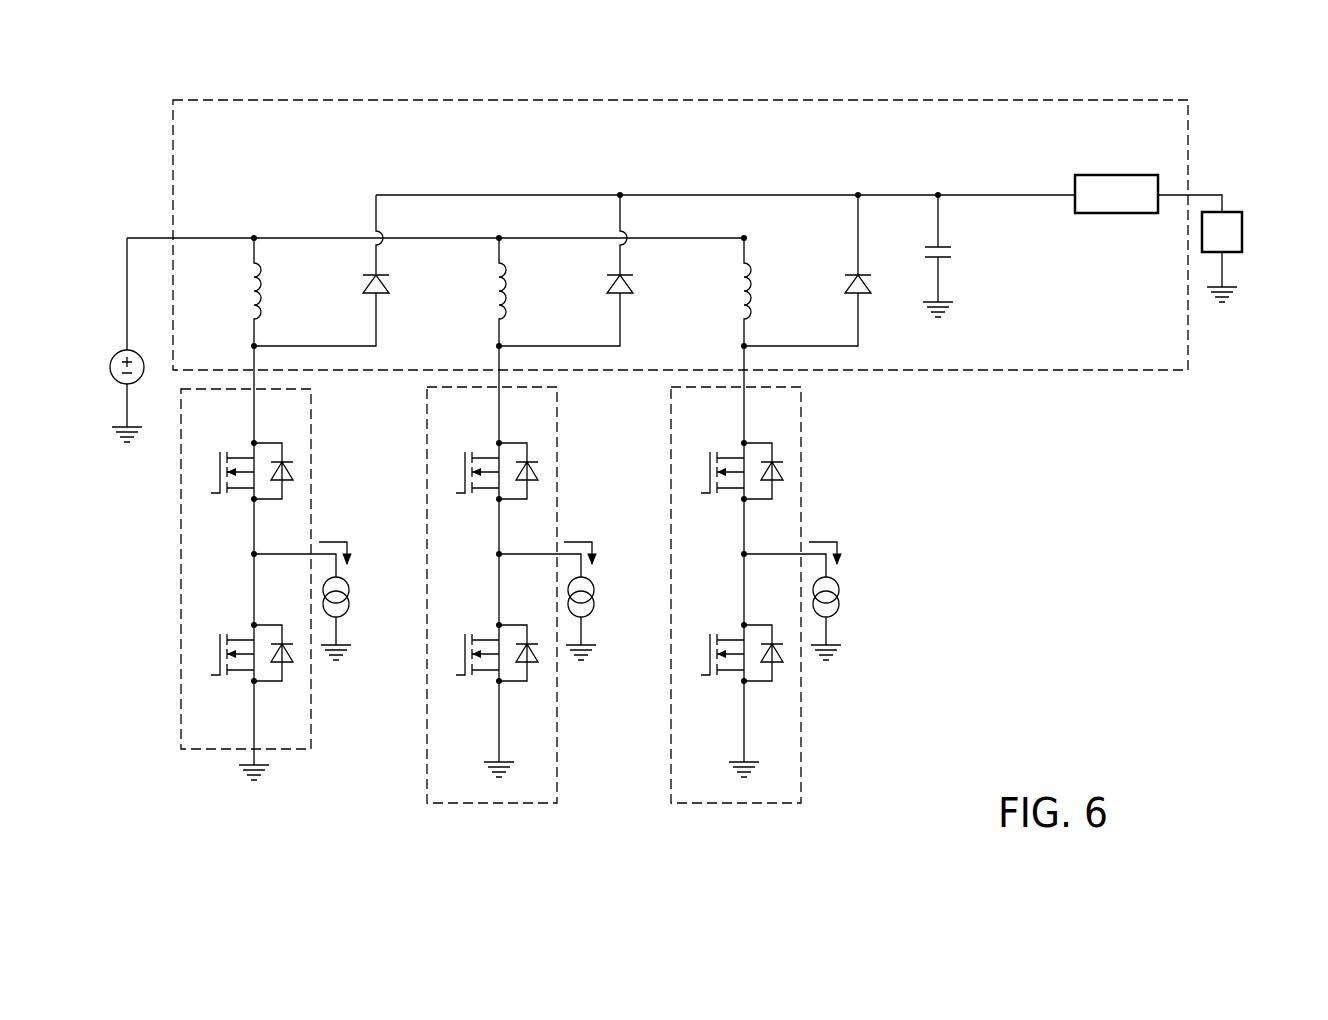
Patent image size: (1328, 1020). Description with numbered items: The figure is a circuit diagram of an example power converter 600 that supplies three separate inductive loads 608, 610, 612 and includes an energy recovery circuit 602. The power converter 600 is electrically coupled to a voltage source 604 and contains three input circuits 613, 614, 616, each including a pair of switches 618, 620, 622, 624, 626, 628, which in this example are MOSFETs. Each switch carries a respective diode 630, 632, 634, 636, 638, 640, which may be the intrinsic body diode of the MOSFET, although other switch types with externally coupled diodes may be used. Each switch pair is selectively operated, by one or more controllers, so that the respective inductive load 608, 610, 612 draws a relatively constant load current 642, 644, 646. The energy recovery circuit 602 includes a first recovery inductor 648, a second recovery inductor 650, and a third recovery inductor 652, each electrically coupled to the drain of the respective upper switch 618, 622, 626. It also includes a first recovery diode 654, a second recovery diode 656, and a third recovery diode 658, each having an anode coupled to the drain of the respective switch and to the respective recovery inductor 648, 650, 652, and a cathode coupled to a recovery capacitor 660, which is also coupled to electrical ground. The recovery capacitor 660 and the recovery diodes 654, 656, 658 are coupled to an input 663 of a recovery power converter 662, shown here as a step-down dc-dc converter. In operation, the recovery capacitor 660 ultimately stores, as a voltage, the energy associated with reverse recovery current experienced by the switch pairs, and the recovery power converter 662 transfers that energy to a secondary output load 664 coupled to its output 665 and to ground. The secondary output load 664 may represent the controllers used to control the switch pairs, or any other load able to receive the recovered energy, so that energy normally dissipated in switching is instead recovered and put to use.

The power converter 600 is at (122, 182).
The energy recovery circuit 602 is at (1190, 351).
The voltage source 604 is at (117, 351).
The inductive load 608 is at (350, 605).
The inductive load 610 is at (595, 605).
The inductive load 612 is at (840, 600).
The input circuit 613 is at (218, 750).
The input circuit 614 is at (465, 803).
The input circuit 616 is at (722, 803).
The switch 618 is at (207, 478).
The switch 620 is at (207, 660).
The switch 622 is at (452, 473).
The switch 624 is at (452, 660).
The switch 626 is at (697, 473).
The switch 628 is at (697, 660).
The diode 630 is at (299, 464).
The diode 632 is at (301, 678).
The diode 634 is at (546, 466).
The diode 636 is at (546, 678).
The diode 638 is at (791, 466).
The diode 640 is at (791, 678).
The load current 642 is at (352, 543).
The load current 644 is at (596, 543).
The load current 646 is at (841, 543).
The first recovery inductor 648 is at (242, 290).
The second recovery inductor 650 is at (487, 290).
The third recovery inductor 652 is at (732, 290).
The first recovery diode 654 is at (355, 266).
The second recovery diode 656 is at (602, 266).
The third recovery diode 658 is at (873, 298).
The recovery capacitor 660 is at (929, 242).
The recovery power converter 662 is at (1106, 214).
The input 663 is at (1059, 179).
The secondary output load 664 is at (1243, 236).
The output 665 is at (1171, 208).